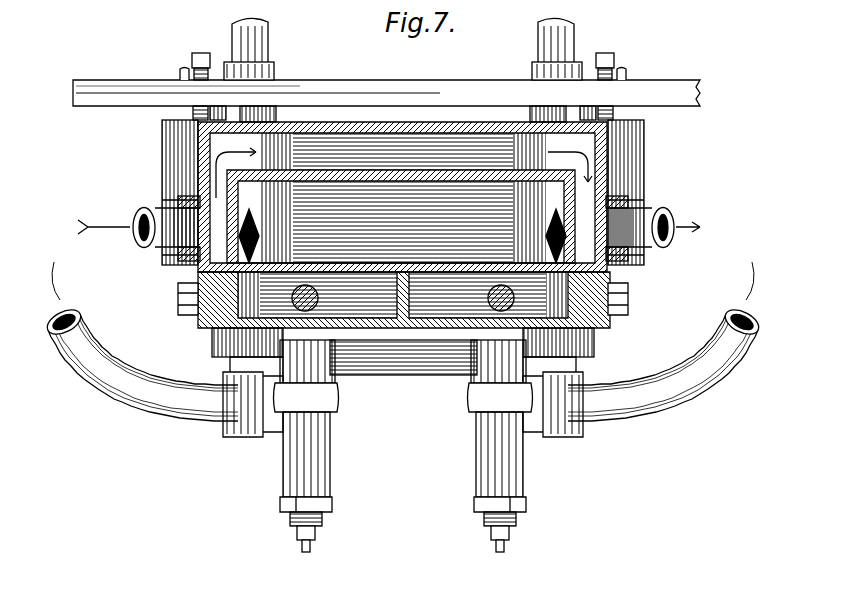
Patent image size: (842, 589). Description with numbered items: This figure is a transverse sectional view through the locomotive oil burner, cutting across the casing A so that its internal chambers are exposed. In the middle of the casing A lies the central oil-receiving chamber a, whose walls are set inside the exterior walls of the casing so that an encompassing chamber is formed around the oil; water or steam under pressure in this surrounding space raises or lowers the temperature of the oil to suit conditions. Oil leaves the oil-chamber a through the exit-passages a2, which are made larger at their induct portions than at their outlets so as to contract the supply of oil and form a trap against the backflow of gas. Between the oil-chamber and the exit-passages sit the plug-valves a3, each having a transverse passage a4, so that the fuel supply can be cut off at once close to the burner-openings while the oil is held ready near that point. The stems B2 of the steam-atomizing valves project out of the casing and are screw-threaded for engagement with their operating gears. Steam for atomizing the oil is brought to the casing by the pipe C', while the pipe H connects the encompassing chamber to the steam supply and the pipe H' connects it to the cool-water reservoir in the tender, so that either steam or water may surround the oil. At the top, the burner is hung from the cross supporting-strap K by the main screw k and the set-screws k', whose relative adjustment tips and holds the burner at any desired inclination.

The cross supporting-strap K is at (364, 92).
The main screw k is at (402, 62).
The set-screw k' is at (406, 69).
The casing A is at (200, 143).
The steam-supply pipe H is at (139, 213).
The water pipe H' is at (653, 210).
The plug-valve a3 is at (403, 151).
The oil-receiving chamber a is at (403, 222).
The exit-passage a2 is at (256, 233).
The transverse passage a4 is at (548, 233).
The valve stem B2 is at (306, 290).
The steam-supply pipe C' is at (401, 344).